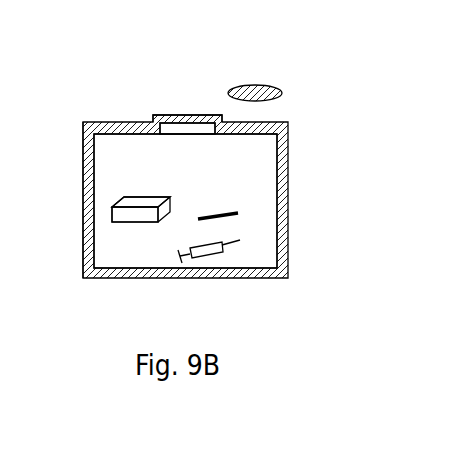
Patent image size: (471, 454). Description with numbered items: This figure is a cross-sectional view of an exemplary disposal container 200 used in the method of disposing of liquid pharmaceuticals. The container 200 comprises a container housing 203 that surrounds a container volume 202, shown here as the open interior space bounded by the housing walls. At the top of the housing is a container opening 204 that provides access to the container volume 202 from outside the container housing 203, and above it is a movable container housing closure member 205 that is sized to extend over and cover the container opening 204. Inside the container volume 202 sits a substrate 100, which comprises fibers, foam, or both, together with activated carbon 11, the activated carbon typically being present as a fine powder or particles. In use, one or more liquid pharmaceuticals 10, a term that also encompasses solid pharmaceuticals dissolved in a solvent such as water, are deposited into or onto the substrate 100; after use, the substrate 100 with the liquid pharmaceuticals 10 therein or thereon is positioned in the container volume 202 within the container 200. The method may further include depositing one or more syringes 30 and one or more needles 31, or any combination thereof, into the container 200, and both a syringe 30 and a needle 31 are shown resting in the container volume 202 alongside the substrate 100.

The container 200 is at (82, 182).
The container volume 202 is at (129, 170).
The container housing 203 is at (82, 229).
The container opening 204 is at (186, 128).
The movable container housing closure member 205 is at (258, 87).
The substrate 100 is at (128, 217).
The activated carbon 11 is at (130, 200).
The liquid pharmaceuticals 10 is at (143, 221).
The needle 31 is at (222, 212).
The syringe 30 is at (218, 251).